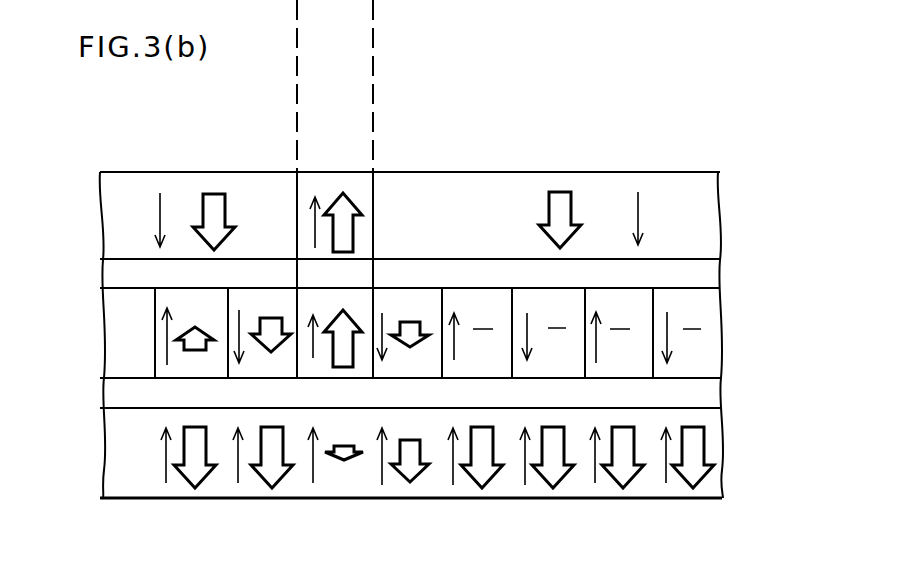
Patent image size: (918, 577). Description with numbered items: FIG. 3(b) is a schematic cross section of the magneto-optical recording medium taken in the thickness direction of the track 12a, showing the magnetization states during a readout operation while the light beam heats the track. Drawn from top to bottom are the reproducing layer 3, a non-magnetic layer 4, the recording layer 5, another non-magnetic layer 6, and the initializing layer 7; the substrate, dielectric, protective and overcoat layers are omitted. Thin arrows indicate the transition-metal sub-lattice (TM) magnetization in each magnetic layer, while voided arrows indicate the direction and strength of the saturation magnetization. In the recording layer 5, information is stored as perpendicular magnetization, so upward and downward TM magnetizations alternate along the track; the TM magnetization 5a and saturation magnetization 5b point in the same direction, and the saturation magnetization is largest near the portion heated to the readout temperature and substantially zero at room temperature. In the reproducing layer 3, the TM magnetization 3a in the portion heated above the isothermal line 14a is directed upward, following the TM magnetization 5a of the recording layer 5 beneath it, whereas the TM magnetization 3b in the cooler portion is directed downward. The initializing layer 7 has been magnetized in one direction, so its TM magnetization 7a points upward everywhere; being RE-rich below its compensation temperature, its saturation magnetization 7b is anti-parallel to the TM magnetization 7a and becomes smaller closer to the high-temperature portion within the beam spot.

The reproducing layer 3 is at (700, 236).
The TM magnetization 3a is at (312, 218).
The TM magnetization 3b is at (158, 208).
The non-magnetic layer 4 is at (700, 284).
The recording layer 5 is at (710, 361).
The TM magnetization 5a is at (300, 342).
The saturation magnetization 5b is at (352, 327).
The non-magnetic layer 6 is at (708, 397).
The initializing layer 7 is at (717, 458).
The TM magnetization 7a is at (167, 455).
The saturation magnetization 7b is at (207, 472).
The track 12a is at (665, 173).
The isothermal line 14a is at (352, 157).